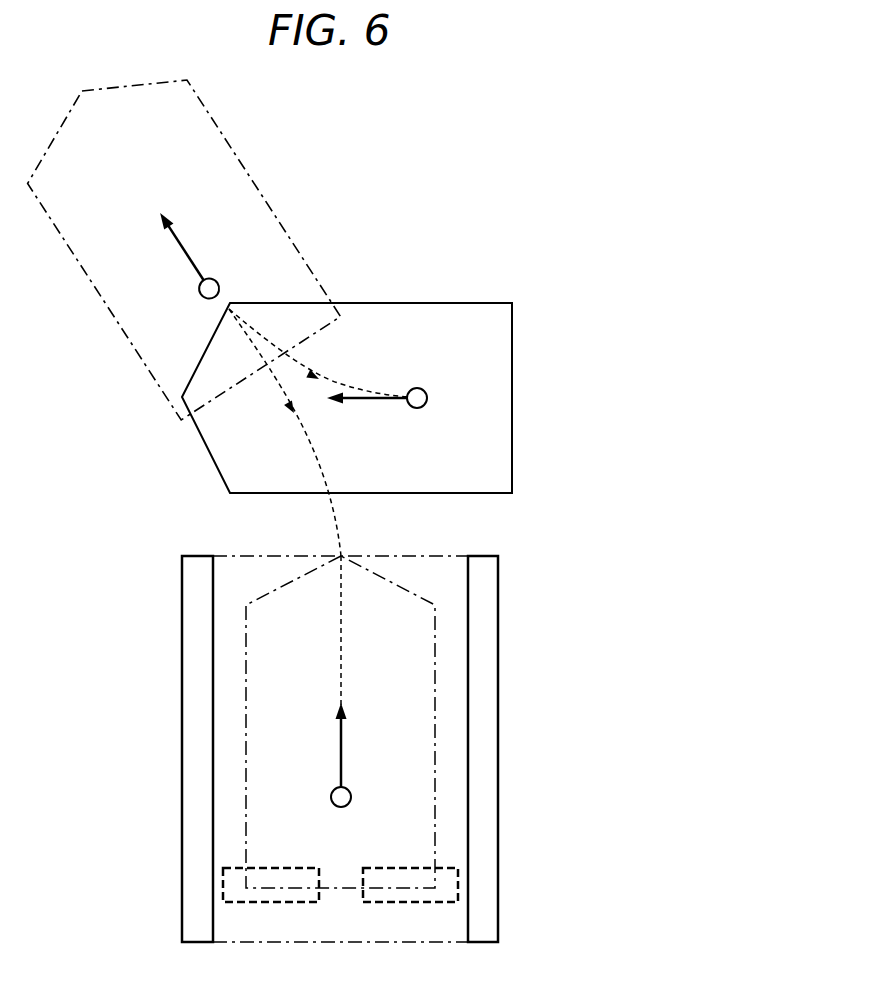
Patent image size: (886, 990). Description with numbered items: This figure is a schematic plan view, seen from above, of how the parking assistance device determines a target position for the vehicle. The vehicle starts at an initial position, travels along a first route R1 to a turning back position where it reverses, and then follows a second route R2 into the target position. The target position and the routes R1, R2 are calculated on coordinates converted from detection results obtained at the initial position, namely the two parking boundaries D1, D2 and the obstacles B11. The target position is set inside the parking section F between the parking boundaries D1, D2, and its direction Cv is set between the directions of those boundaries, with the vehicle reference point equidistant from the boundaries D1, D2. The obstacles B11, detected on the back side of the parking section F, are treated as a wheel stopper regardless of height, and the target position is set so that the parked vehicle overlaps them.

The route R1 is at (338, 383).
The route R2 is at (335, 527).
The parking section F is at (455, 598).
The direction of the target position Cv is at (329, 755).
The parking boundary D1 is at (171, 727).
The parking boundary D2 is at (511, 727).
The obstacles B11 is at (223, 883).